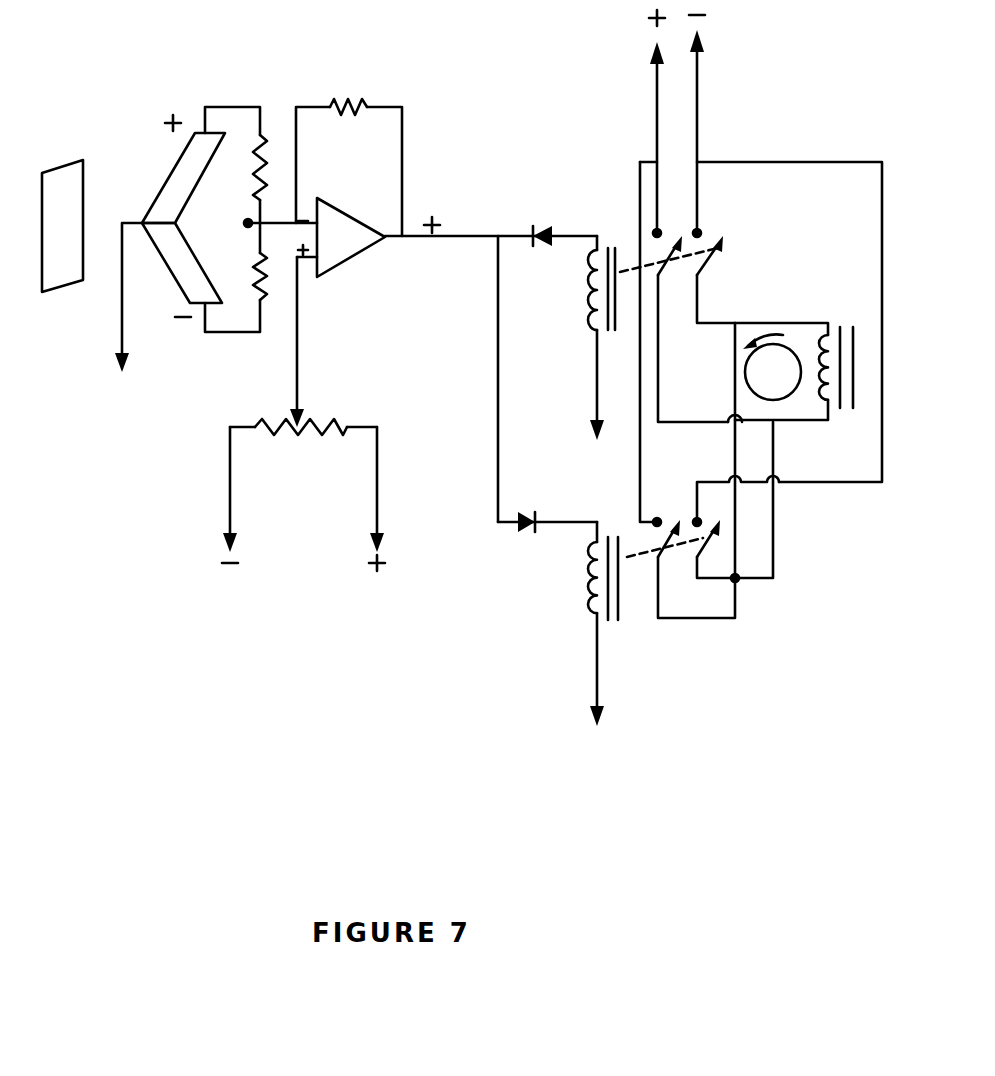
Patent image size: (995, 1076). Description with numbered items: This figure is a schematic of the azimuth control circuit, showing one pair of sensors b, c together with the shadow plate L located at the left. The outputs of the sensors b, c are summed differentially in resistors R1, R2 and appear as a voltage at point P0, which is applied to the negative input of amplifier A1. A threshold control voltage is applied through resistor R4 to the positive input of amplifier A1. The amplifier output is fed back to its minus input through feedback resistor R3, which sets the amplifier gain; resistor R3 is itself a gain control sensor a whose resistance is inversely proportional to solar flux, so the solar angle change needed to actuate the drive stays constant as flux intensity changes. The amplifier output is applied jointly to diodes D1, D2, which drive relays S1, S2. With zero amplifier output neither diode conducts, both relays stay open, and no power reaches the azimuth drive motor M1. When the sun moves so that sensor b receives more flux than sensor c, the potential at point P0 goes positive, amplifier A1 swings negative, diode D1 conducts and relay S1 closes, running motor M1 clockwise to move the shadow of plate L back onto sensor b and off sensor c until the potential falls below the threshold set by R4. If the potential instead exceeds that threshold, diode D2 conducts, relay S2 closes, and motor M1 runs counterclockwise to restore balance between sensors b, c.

The shadow plate L is at (62, 236).
The azimuth control sensor b is at (183, 178).
The azimuth control sensor c is at (182, 263).
The resistor R1 is at (236, 165).
The resistor R2 is at (236, 277).
The point P0 is at (267, 229).
The feedback resistor R3 is at (349, 156).
The gain control sensor a is at (345, 131).
The amplifier A1 is at (341, 237).
The threshold resistor R4 is at (303, 414).
The diode D1 is at (541, 221).
The diode D2 is at (547, 508).
The relay S1 is at (631, 338).
The relay S2 is at (627, 624).
The azimuth drive motor M1 is at (794, 371).